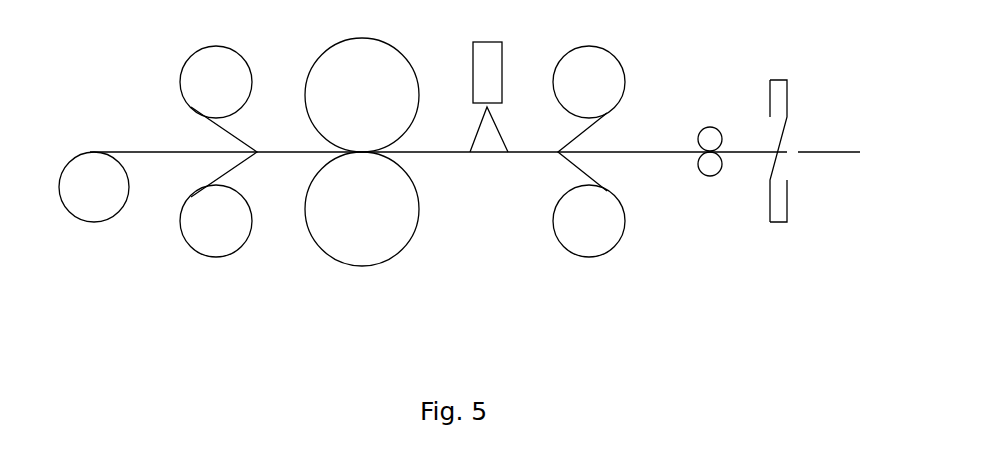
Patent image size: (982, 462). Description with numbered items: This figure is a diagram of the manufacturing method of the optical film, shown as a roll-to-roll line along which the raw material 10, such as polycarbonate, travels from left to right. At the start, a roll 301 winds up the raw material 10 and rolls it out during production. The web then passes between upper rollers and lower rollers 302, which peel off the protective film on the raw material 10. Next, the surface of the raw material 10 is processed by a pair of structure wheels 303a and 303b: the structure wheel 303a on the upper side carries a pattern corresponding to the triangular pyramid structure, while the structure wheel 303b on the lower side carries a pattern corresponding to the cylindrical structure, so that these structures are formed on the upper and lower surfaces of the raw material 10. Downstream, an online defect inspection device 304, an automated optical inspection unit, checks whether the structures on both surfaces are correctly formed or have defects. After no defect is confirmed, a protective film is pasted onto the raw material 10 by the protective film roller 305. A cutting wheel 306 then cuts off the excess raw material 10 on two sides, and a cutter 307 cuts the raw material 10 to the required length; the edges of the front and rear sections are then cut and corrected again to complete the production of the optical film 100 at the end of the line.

The raw material 10 is at (137, 150).
The optical film 100 is at (820, 152).
The roll 301 is at (108, 217).
The upper rollers and lower rollers 302 is at (215, 47).
The structure wheel 303a is at (370, 38).
The structure wheel 303b is at (400, 253).
The online defect inspection device 304 is at (487, 42).
The protective film roller 305 is at (602, 47).
The cutting wheel 306 is at (715, 127).
The cutter 307 is at (780, 80).